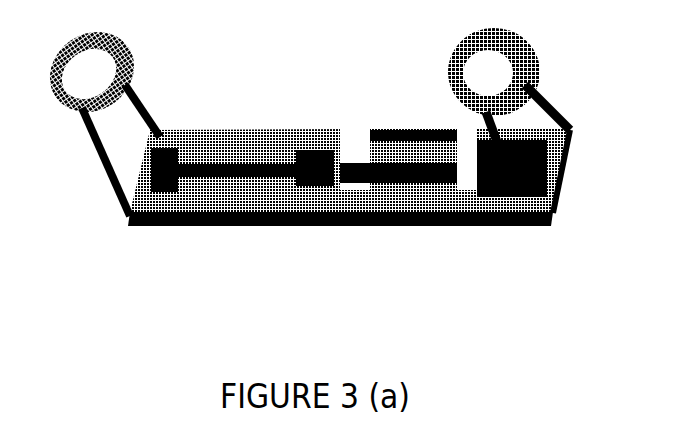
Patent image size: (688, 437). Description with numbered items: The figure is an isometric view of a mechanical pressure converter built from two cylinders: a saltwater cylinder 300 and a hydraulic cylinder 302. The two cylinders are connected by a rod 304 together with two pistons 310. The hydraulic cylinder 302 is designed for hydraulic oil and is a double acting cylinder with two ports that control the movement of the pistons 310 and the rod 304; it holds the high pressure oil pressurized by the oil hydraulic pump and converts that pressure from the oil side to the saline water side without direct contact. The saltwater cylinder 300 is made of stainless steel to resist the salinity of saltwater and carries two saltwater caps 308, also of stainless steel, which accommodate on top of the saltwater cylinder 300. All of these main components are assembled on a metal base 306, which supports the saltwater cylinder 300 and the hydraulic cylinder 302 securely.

The saltwater cylinder 300 is at (240, 160).
The hydraulic cylinder 302 is at (407, 152).
The rod 304 is at (313, 165).
The metal base 306 is at (307, 197).
The saltwater caps 308 is at (194, 152).
The pistons 310 is at (273, 168).